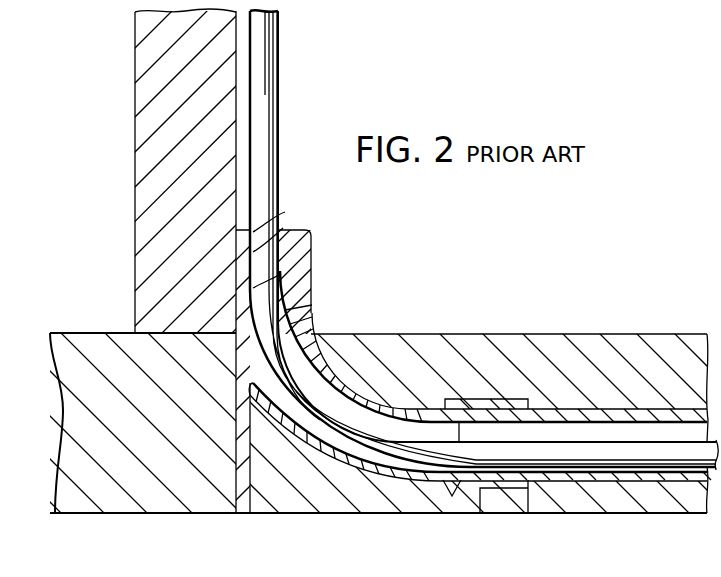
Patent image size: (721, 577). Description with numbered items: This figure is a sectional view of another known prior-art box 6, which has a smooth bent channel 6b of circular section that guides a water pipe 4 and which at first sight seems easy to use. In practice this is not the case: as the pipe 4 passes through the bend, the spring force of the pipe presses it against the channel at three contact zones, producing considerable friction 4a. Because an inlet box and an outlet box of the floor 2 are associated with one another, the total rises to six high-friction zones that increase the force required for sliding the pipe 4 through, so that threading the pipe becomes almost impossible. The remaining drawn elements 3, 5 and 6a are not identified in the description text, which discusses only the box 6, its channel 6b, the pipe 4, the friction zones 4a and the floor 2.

The floor 2 is at (483, 342).
The liner strip 3 is at (586, 418).
The water pipe 4 is at (484, 240).
The friction zones 4a is at (268, 300).
The upper block 5 is at (148, 192).
The box 6 is at (348, 393).
The upper sleeve part 6a is at (312, 303).
The bent channel 6b is at (340, 438).